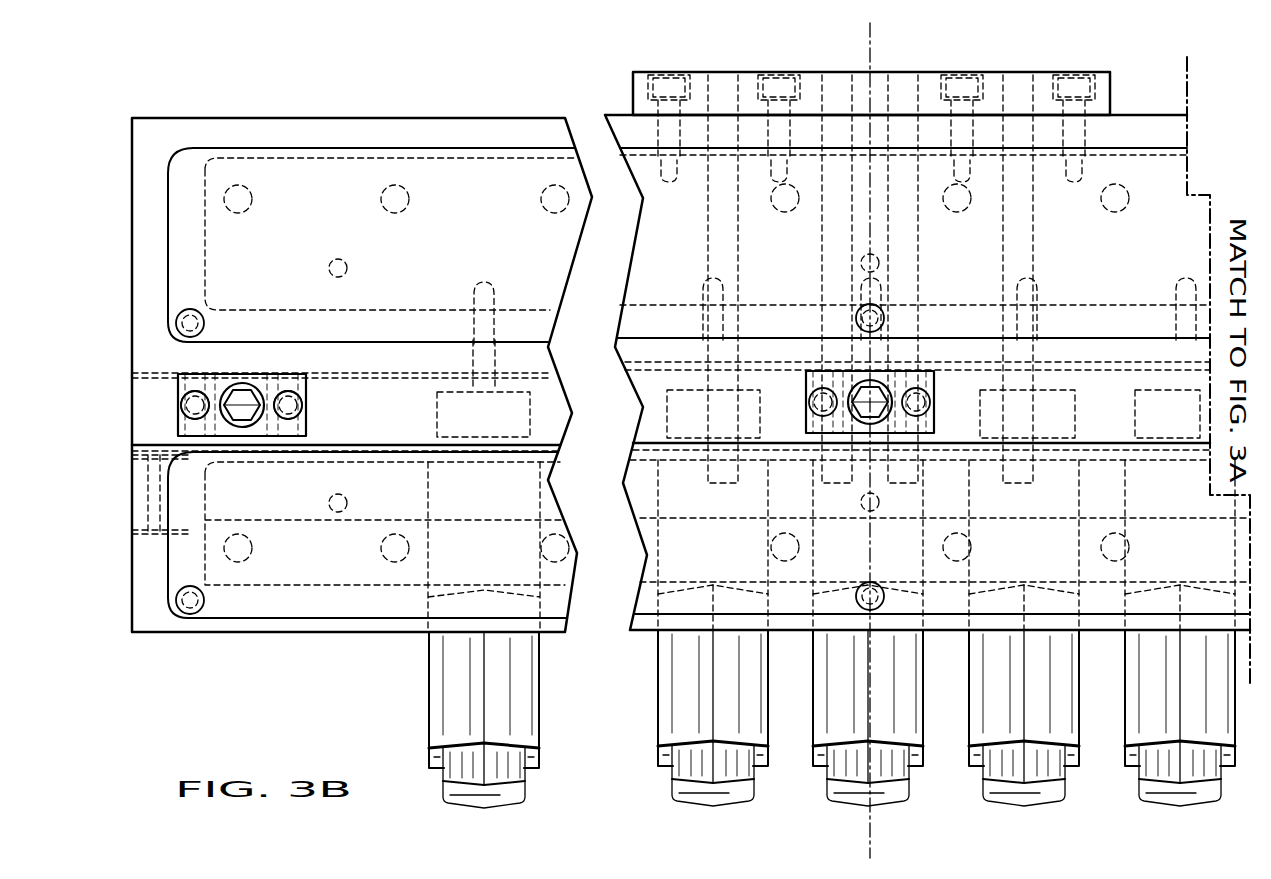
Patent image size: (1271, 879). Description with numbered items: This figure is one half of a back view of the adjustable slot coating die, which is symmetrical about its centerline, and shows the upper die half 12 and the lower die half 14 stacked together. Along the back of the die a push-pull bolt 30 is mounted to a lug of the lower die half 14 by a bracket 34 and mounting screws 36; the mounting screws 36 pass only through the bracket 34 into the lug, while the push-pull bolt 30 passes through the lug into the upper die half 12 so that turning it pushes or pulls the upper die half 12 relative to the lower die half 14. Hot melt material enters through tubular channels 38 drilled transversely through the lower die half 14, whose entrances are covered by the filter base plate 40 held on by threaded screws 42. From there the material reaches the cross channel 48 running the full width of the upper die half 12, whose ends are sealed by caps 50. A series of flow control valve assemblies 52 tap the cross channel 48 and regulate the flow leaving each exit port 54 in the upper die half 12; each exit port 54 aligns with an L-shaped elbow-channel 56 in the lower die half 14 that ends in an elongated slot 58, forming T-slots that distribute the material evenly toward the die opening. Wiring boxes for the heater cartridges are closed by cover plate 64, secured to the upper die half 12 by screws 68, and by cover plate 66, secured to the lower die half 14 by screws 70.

The upper die half 12 is at (405, 627).
The lower die half 14 is at (313, 133).
The push-pull bolts 30 is at (240, 395).
The bracket 34 is at (177, 418).
The mounting screws 36 is at (190, 403).
The tubular channels 38 is at (723, 173).
The filter base plate 40 is at (1025, 70).
The threaded screws 42 is at (668, 85).
The cross channel 48 is at (265, 500).
The caps 50 is at (158, 506).
The flow control valve assemblies 52 is at (692, 817).
The exit ports 54 is at (483, 380).
The elbow-channels 56 is at (483, 283).
The elongated slots 58 is at (443, 362).
The cover plate 64 is at (330, 607).
The cover plate 66 is at (190, 172).
The screws 68 is at (190, 605).
The screws 70 is at (187, 317).